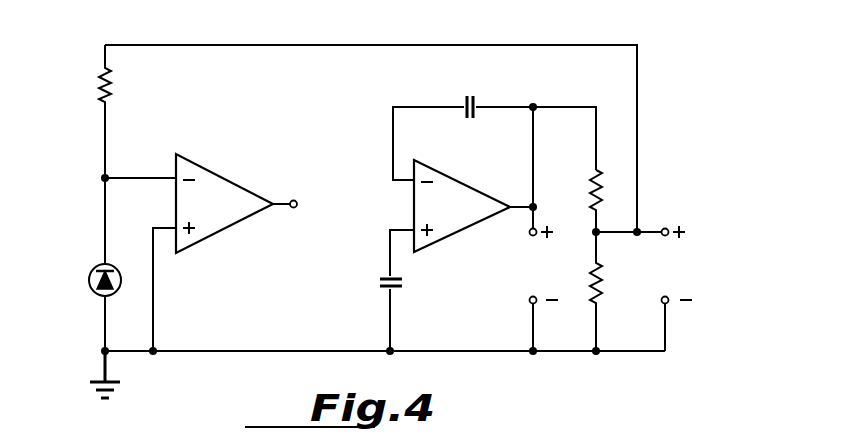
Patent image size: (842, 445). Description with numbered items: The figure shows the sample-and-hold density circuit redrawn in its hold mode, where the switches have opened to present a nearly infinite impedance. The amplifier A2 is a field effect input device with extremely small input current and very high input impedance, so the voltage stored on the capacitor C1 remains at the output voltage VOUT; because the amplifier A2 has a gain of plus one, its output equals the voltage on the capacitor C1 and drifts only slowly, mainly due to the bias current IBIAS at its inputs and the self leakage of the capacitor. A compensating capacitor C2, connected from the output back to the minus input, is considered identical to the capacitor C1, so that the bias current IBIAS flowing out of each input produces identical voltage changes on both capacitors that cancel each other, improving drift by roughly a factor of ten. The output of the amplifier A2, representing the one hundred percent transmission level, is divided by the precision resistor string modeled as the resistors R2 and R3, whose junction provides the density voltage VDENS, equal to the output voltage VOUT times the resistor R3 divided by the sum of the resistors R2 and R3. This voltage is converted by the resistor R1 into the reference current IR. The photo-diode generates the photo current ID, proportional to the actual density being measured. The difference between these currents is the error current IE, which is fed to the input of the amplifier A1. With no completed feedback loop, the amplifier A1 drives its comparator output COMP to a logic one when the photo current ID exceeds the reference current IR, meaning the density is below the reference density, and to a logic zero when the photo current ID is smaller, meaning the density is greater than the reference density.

The resistor R1 is at (102, 72).
The amplifier A1 is at (224, 211).
The amplifier A2 is at (463, 213).
The capacitor C1 is at (405, 282).
The capacitor C2 is at (478, 100).
The resistor R2 is at (598, 178).
The resistor R3 is at (600, 284).
The comparator output COMP is at (318, 204).
The output voltage VOUT is at (535, 288).
The density voltage VDENS is at (655, 288).
The reference current IR is at (87, 125).
The photo current ID is at (87, 192).
The error current IE is at (162, 165).
The bias current IBIAS is at (379, 262).